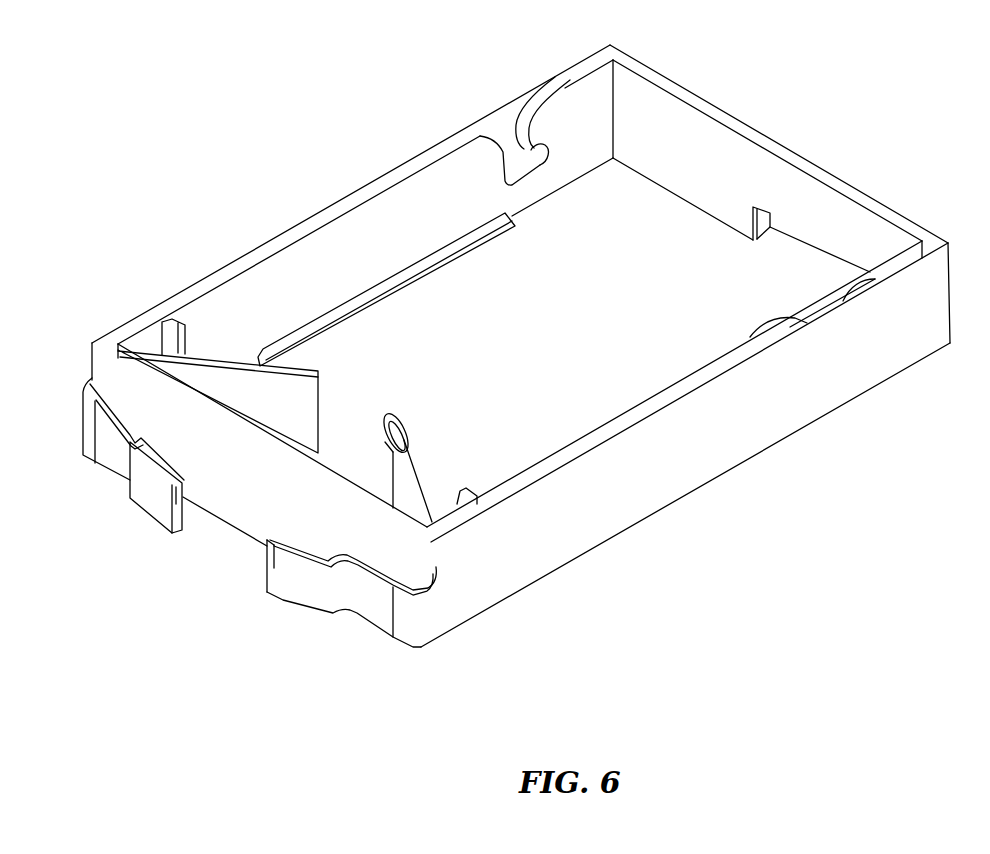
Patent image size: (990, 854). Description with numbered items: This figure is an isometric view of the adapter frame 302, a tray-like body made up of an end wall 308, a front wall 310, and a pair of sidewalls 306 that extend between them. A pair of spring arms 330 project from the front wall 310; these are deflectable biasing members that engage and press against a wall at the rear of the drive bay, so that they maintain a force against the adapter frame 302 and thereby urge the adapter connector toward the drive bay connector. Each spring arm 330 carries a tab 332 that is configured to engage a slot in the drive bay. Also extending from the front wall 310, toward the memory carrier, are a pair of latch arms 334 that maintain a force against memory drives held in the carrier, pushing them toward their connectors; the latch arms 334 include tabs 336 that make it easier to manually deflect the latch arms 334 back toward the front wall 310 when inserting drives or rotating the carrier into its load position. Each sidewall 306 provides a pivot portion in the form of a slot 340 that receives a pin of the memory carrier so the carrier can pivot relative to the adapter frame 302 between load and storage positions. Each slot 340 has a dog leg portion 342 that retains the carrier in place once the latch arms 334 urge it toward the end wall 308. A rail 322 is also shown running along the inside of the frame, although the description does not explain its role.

The adapter frame 302 is at (521, 346).
The sidewall 306 is at (233, 262).
The end wall 308 is at (808, 188).
The front wall 310 is at (232, 527).
The rail 322 is at (362, 285).
The spring arm 330 is at (118, 455).
The tab 332 is at (160, 503).
The latch arm 334 is at (321, 395).
The tab 336 is at (398, 428).
The slot 340 is at (503, 125).
The dog leg portion 342 is at (546, 168).